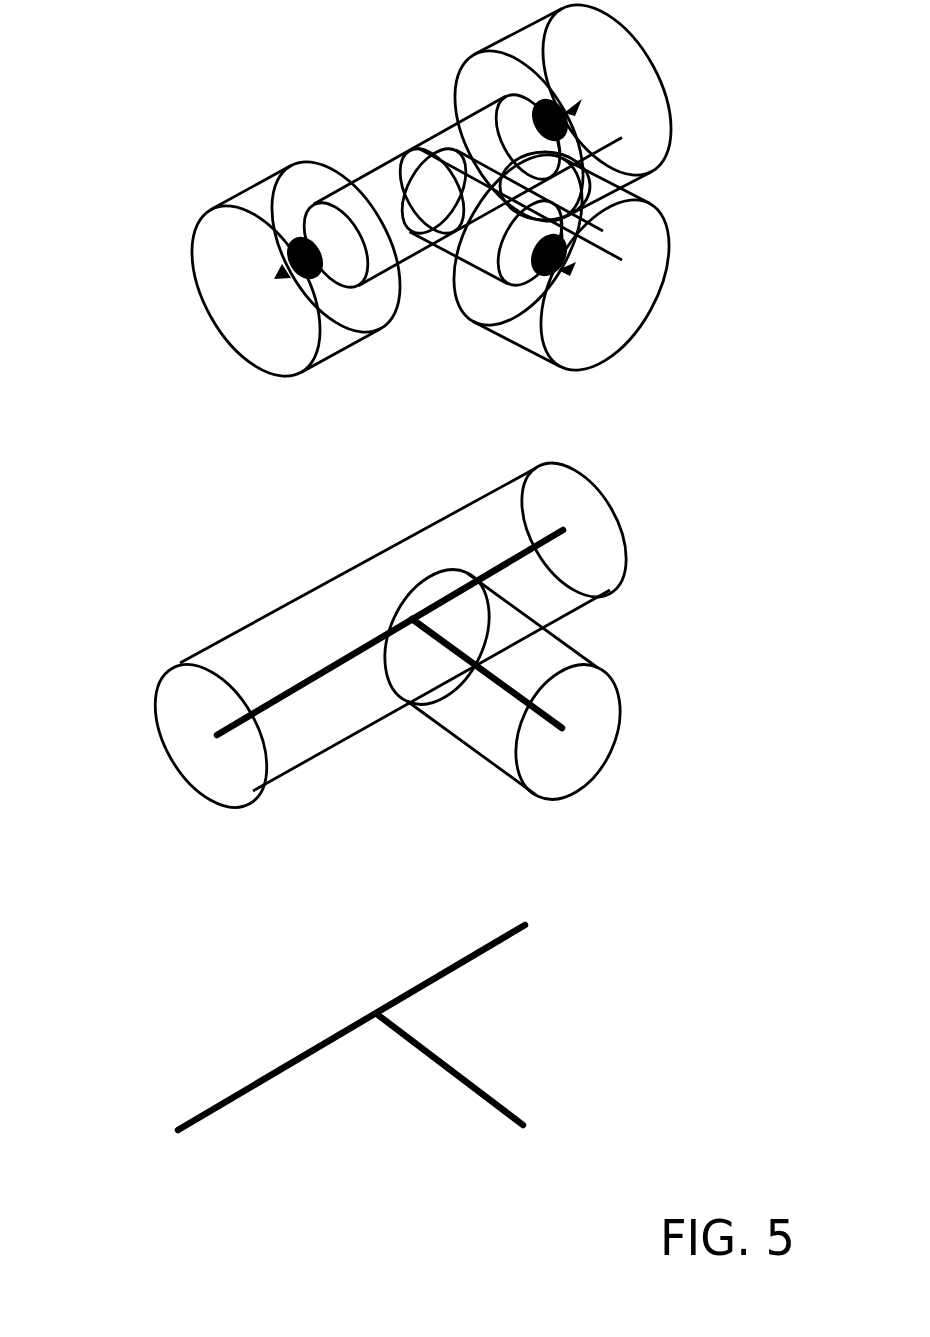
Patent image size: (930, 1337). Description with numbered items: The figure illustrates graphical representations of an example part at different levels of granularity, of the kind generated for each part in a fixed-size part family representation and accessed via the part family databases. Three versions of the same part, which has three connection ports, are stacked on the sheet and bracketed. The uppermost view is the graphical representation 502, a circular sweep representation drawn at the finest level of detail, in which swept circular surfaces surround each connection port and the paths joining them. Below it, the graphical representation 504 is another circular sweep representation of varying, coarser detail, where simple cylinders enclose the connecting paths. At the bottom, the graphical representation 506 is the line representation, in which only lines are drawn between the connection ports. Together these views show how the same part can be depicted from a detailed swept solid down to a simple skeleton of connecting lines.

The graphical representation 502 is at (127, 95).
The graphical representation 504 is at (127, 535).
The graphical representation 506 is at (127, 962).